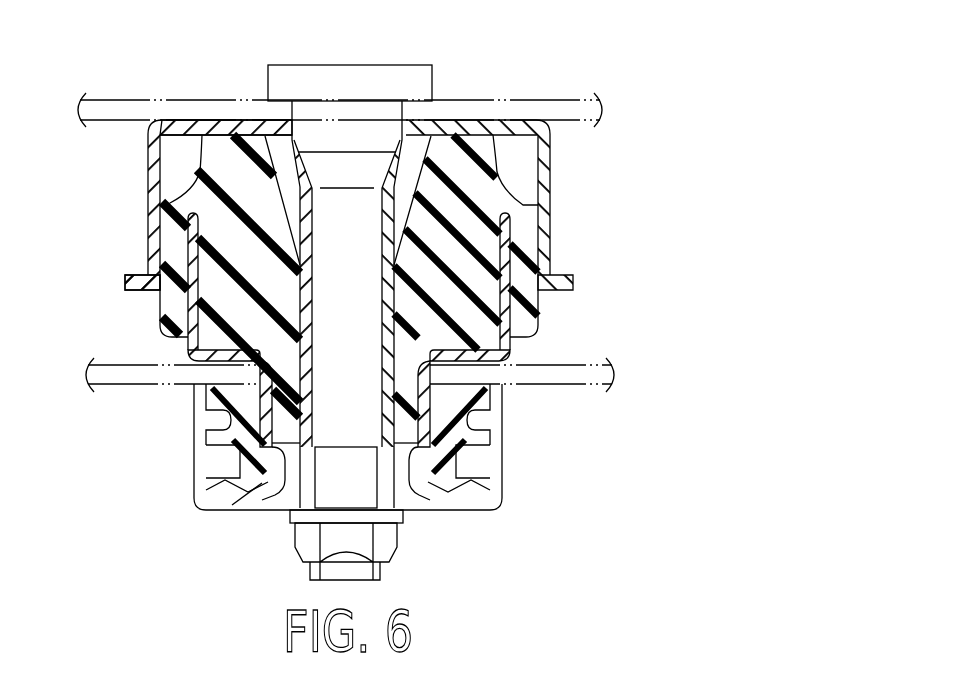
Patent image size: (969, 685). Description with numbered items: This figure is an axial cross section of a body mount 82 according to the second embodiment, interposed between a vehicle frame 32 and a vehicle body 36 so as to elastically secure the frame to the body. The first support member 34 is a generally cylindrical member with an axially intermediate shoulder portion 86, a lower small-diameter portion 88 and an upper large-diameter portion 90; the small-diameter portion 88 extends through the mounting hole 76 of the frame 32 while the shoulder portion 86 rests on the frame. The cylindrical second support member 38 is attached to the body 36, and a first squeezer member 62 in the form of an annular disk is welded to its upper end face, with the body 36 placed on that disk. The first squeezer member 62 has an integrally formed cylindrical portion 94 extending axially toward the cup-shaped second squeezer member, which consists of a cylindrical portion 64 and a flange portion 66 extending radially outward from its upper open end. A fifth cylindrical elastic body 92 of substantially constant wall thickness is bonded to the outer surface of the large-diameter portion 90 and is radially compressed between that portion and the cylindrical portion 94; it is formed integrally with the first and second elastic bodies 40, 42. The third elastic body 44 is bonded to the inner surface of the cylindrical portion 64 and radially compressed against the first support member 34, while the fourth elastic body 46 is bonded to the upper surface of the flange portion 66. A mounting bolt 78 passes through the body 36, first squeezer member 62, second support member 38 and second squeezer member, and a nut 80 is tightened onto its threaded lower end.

The frame 32 is at (578, 384).
The first support member 34 is at (520, 300).
The body 36 is at (143, 106).
The second support member 38 is at (307, 246).
The first cylindrical elastic body 40 is at (444, 393).
The second cylindrical elastic body 42 is at (237, 167).
The third cylindrical elastic body 44 is at (458, 445).
The fourth cylindrical elastic body 46 is at (204, 393).
The first squeezer member 62 is at (253, 125).
The cylindrical portion 64 is at (210, 473).
The flange portion 66 is at (251, 490).
The mounting hole 76 is at (407, 378).
The mounting bolt 78 is at (350, 78).
The nut 80 is at (388, 530).
The body mount 82 is at (356, 297).
The shoulder portion 86 is at (506, 350).
The small-diameter portion 88 is at (242, 442).
The large-diameter portion 90 is at (187, 316).
The fifth cylindrical elastic body 92 is at (528, 241).
The cylindrical portion 94 is at (152, 240).